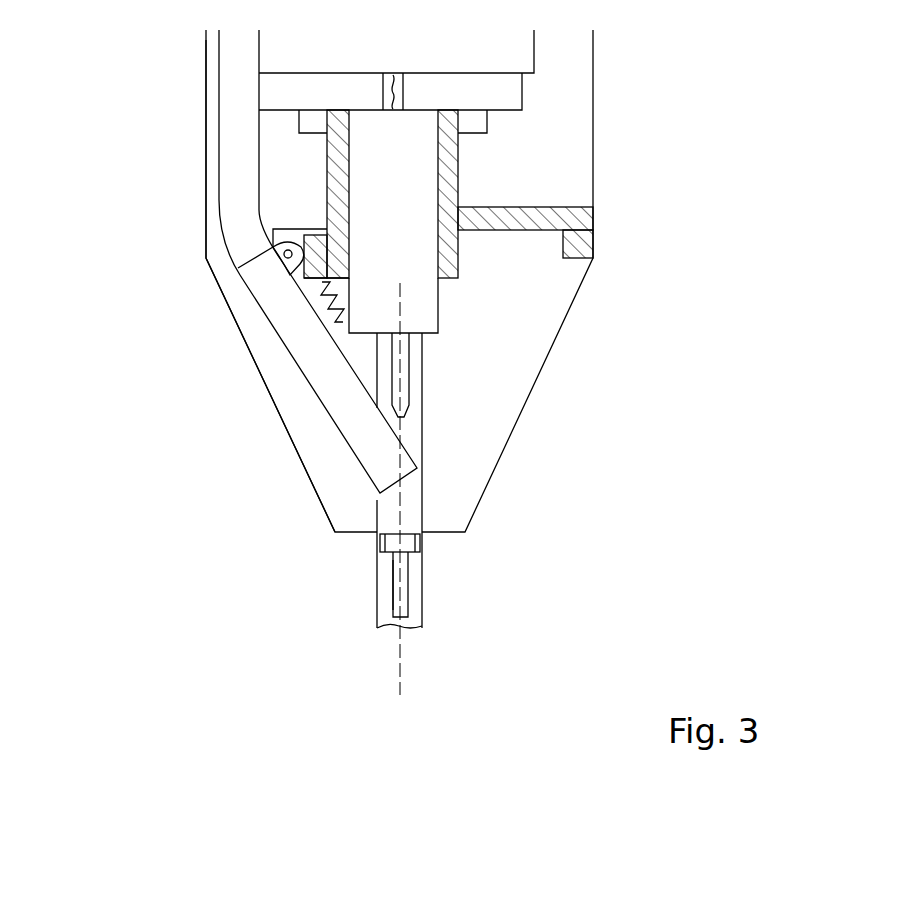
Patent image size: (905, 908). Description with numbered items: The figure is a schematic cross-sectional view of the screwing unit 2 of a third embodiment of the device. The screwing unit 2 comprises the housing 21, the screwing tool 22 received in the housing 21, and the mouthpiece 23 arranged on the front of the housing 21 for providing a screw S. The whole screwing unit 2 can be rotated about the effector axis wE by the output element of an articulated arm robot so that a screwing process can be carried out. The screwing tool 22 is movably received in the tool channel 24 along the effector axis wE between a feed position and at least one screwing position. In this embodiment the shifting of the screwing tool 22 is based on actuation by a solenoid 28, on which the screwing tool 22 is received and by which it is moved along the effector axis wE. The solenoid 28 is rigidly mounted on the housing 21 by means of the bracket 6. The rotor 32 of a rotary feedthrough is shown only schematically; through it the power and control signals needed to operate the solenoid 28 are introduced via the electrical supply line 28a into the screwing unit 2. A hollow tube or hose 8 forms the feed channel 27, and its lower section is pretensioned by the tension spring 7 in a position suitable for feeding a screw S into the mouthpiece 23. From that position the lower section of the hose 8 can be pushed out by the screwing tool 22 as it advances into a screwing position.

The screwing unit 2 is at (750, 32).
The bracket 6 is at (476, 244).
The tension spring 7 is at (310, 294).
The hose 8 is at (312, 387).
The housing 21 is at (200, 130).
The screwing tool 22 is at (401, 386).
The mouthpiece 23 is at (377, 585).
The tool channel 24 is at (415, 497).
The feed channel 27 is at (236, 231).
The solenoid 28 is at (408, 197).
The electrical supply line 28a is at (410, 92).
The rotor 32 is at (292, 53).
The screw S is at (402, 580).
The effector axis wE is at (398, 681).